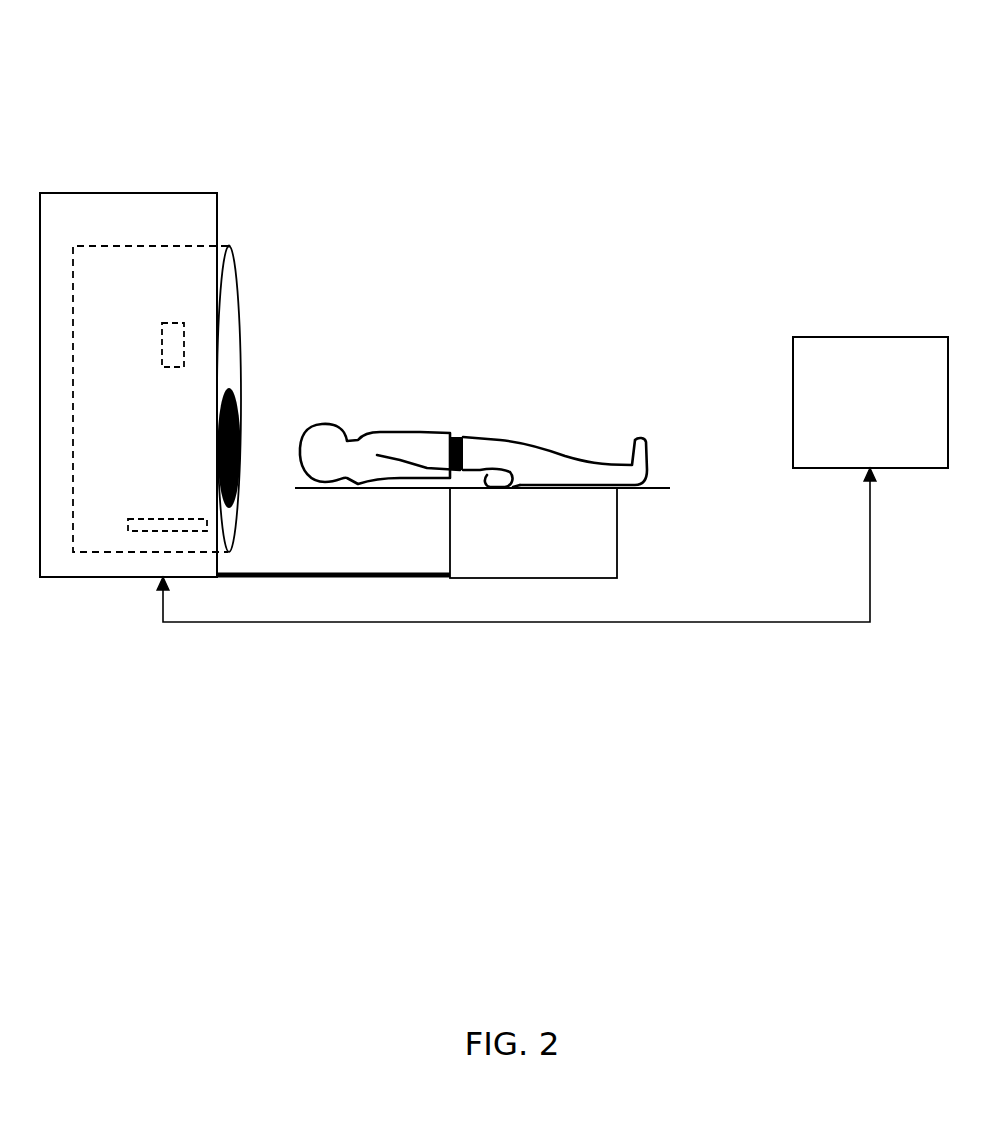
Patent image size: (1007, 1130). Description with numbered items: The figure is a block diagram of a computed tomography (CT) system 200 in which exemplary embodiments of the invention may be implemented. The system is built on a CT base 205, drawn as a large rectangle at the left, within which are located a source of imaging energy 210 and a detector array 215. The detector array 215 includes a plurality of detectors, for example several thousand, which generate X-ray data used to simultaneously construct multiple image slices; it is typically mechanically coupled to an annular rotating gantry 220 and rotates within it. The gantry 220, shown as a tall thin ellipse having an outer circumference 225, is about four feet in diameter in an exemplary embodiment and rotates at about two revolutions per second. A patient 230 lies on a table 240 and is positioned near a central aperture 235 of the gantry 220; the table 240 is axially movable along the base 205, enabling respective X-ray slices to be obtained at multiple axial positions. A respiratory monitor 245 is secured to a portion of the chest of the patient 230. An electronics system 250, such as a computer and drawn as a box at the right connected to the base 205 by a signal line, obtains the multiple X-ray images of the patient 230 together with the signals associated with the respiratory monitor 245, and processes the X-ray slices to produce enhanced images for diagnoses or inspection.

The CT system 200 is at (540, 63).
The CT base 205 is at (130, 192).
The source of imaging energy 210 is at (175, 322).
The detector array 215 is at (140, 518).
The annular rotating gantry 220 is at (243, 300).
The outer circumference 225 is at (229, 246).
The patient 230 is at (581, 460).
The central aperture 235 is at (240, 410).
The table 240 is at (617, 553).
The respiratory monitor 245 is at (461, 436).
The electronics system 250 is at (870, 335).